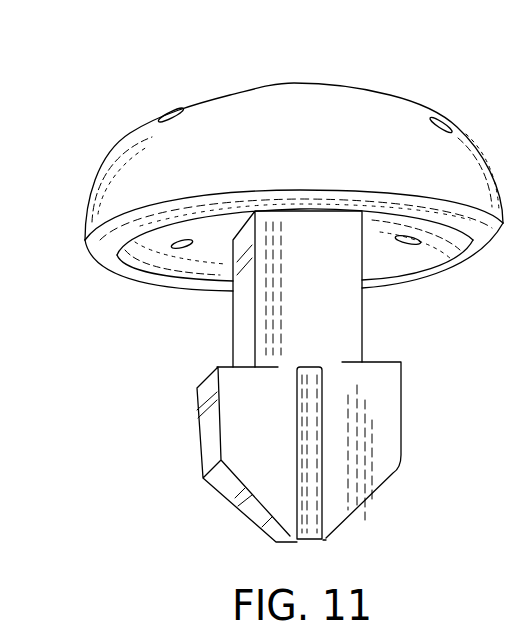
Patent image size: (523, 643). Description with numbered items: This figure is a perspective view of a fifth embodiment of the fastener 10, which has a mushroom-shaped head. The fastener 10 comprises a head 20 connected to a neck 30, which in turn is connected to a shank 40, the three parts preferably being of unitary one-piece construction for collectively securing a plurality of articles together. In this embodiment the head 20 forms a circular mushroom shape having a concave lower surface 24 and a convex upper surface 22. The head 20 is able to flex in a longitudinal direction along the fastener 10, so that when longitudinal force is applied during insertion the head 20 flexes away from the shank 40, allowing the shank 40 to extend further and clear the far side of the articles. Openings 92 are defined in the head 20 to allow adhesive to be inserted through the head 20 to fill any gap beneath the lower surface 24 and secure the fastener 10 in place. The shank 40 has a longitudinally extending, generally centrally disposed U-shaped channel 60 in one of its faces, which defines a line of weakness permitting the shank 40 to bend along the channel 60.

The fastener 10 is at (102, 343).
The head 20 is at (357, 113).
The upper surface 22 is at (265, 83).
The lower surface 24 is at (188, 268).
The neck 30 is at (325, 313).
The shank 40 is at (375, 416).
The U-shaped channel 60 is at (298, 458).
The openings 92 is at (173, 114).